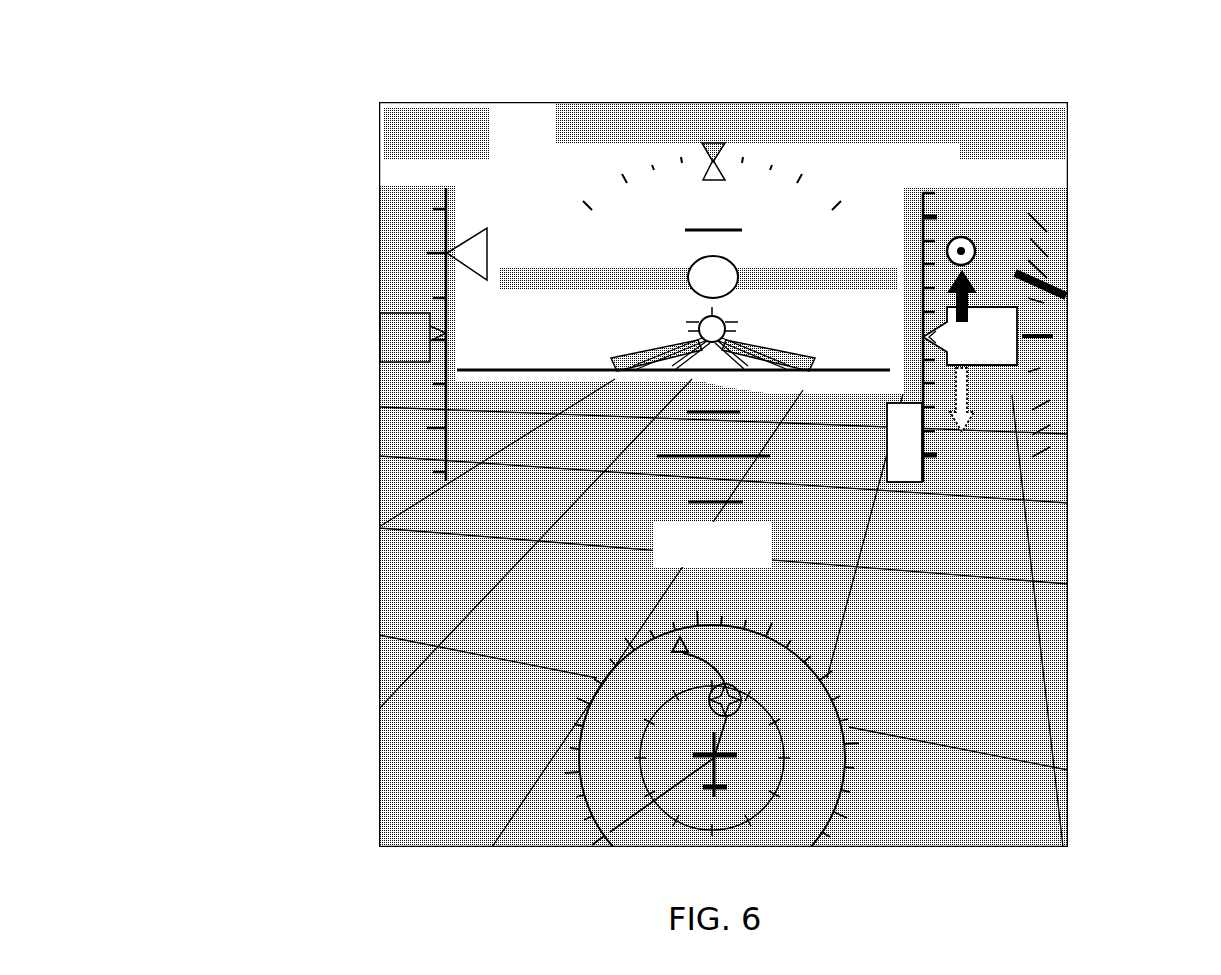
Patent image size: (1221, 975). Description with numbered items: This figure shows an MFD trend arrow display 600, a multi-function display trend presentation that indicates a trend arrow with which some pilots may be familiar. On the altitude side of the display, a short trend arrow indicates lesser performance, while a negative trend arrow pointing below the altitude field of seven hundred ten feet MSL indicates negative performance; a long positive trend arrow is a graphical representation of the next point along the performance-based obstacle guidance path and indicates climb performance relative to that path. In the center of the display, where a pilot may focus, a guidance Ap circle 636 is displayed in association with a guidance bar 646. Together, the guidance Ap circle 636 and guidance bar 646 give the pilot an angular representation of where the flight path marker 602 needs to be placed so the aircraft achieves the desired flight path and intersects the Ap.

The MFD trend arrow display 600 is at (82, 90).
The guidance bar 646 is at (562, 275).
The guidance Ap circle 636 is at (688, 268).
The flight path marker 602 is at (722, 318).